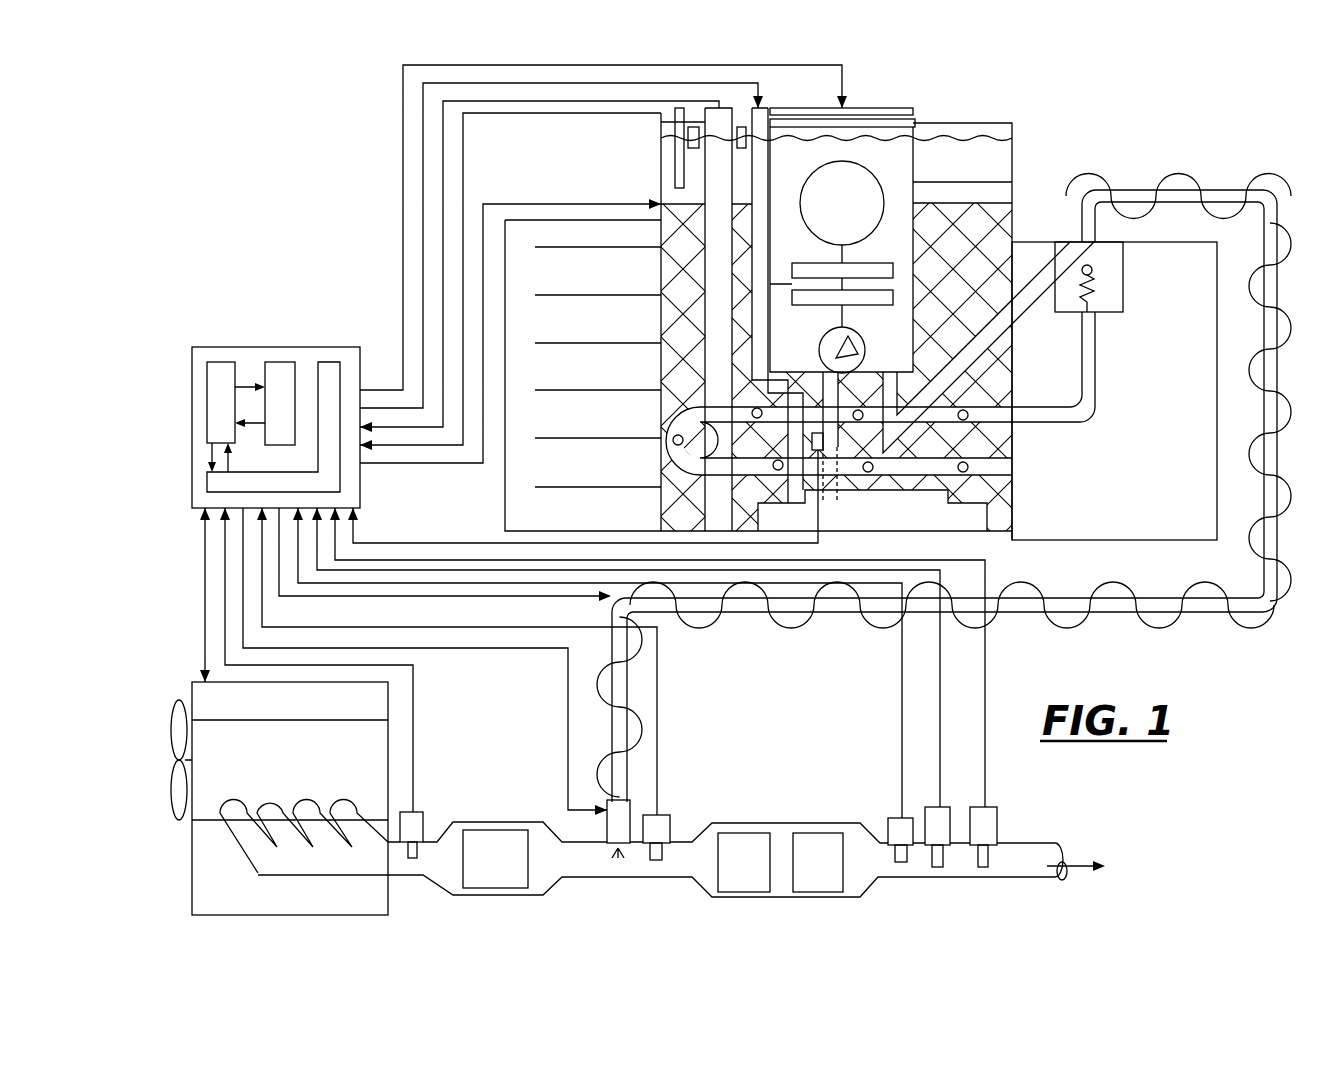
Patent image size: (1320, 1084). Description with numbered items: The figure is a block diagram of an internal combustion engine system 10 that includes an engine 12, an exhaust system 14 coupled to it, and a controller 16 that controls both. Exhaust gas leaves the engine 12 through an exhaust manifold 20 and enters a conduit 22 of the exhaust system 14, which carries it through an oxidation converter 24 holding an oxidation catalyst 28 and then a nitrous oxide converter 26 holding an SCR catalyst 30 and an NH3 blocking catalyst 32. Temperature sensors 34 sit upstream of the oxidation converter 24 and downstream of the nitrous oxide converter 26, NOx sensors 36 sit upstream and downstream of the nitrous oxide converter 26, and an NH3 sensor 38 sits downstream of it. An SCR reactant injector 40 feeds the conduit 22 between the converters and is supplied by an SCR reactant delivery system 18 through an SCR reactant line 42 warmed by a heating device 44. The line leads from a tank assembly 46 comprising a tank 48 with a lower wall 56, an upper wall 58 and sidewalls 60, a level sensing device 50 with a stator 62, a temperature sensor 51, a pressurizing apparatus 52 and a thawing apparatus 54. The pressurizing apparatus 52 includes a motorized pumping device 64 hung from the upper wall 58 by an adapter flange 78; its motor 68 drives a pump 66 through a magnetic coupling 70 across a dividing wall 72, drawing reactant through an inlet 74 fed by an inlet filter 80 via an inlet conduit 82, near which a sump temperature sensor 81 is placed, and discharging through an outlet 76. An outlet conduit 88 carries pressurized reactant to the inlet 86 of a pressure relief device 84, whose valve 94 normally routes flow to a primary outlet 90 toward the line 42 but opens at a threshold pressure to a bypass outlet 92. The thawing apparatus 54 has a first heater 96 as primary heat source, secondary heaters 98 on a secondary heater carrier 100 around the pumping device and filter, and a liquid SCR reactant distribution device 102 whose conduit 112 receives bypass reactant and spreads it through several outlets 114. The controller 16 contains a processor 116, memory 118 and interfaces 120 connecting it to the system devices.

The internal combustion engine system 10 is at (281, 210).
The engine 12 is at (180, 671).
The exhaust system 14 is at (1018, 895).
The controller 16 is at (194, 331).
The SCR reactant delivery system 18 is at (1138, 136).
The exhaust manifold 20 is at (311, 888).
The conduit 22 is at (640, 878).
The oxidation converter 24 is at (510, 803).
The nitrous oxide converter 26 is at (818, 810).
The oxidation catalyst 28 is at (495, 859).
The SCR catalyst 30 is at (744, 862).
The NH3 blocking catalyst 32 is at (818, 862).
The temperature sensors 34 is at (423, 812).
The NOx sensors 36 is at (665, 825).
The NH3 sensor 38 is at (978, 817).
The SCR reactant injector 40 is at (607, 825).
The SCR reactant line 42 is at (723, 605).
The heating device 44 is at (775, 620).
The tank assembly 46 is at (525, 168).
The tank 48 is at (1025, 162).
The level sensing device 50 is at (689, 168).
The temperature sensor 51 is at (655, 130).
The pressurizing apparatus 52 is at (929, 327).
The thawing apparatus 54 is at (774, 489).
The lower wall 56 is at (575, 531).
The upper wall 58 is at (962, 123).
The sidewalls 60 is at (717, 242).
The stator 62 is at (690, 145).
The motorized pumping device 64 is at (925, 172).
The pump 66 is at (860, 333).
The motor 68 is at (803, 193).
The magnetic coupling 70 is at (905, 262).
The dividing wall 72 is at (780, 282).
The inlet 74 is at (833, 370).
The outlet 76 is at (905, 387).
The adapter flange 78 is at (915, 120).
The inlet filter 80 is at (997, 491).
The sump temperature sensor 81 is at (822, 447).
The inlet conduit 82 is at (832, 442).
The pressure relief device 84 is at (1135, 283).
The inlet 86 is at (988, 262).
The outlet conduit 88 is at (1020, 322).
The primary outlet 90 is at (1095, 242).
The bypass outlet 92 is at (1095, 318).
The valve 94 is at (1093, 272).
The first heater 96 is at (760, 327).
The secondary heaters 98 is at (678, 440).
The secondary heater carrier 100 is at (690, 282).
The liquid SCR reactant distribution device 102 is at (1099, 437).
The conduit 112 is at (1085, 388).
The outlets 114 is at (740, 395).
The processor 116 is at (228, 370).
The memory 118 is at (282, 370).
The interfaces 120 is at (330, 370).